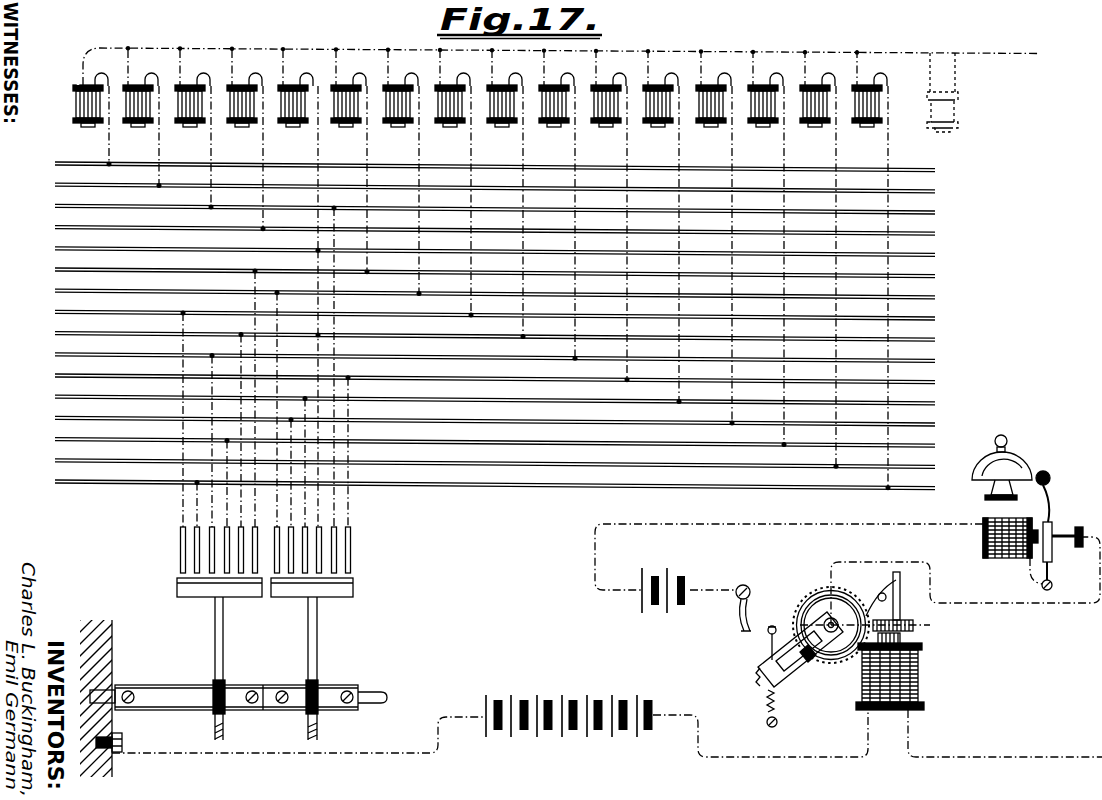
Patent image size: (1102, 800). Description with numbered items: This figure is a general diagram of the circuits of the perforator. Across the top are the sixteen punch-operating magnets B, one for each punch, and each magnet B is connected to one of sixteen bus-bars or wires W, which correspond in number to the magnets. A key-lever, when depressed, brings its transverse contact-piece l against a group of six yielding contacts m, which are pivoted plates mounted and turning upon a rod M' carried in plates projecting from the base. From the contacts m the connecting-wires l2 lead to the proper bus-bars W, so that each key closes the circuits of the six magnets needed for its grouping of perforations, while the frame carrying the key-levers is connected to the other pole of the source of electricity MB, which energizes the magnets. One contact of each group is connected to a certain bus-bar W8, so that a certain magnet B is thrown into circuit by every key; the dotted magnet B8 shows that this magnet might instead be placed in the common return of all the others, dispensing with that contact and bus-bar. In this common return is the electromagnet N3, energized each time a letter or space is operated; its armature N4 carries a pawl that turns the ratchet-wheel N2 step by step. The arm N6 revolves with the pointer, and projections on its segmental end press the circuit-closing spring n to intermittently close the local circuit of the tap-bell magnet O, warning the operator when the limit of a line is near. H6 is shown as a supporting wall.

The punch-operating magnet B is at (75, 106).
The common-return magnet B8 is at (959, 92).
The bus-bar W is at (58, 249).
The common bus-bar W8 is at (56, 335).
The connecting-wire l2 is at (358, 514).
The yielding contact m is at (180, 554).
The transverse contact-piece l is at (200, 586).
The support wall H6 is at (100, 662).
The rod M' is at (238, 715).
The source of electricity MB is at (490, 710).
The ratchet-wheel N2 is at (797, 608).
The circuit-closing spring n is at (741, 619).
The arm N6 is at (797, 678).
The armature N4 is at (908, 608).
The electromagnet N3 is at (885, 711).
The tap-bell magnet O is at (1008, 558).